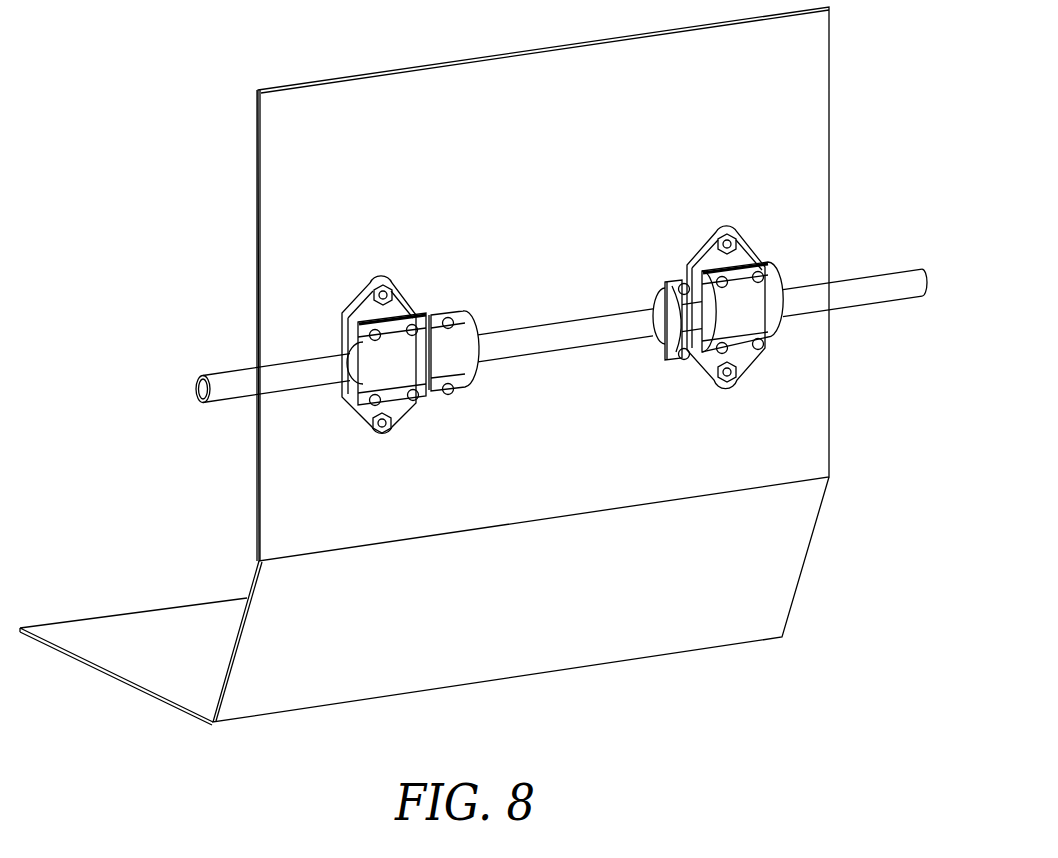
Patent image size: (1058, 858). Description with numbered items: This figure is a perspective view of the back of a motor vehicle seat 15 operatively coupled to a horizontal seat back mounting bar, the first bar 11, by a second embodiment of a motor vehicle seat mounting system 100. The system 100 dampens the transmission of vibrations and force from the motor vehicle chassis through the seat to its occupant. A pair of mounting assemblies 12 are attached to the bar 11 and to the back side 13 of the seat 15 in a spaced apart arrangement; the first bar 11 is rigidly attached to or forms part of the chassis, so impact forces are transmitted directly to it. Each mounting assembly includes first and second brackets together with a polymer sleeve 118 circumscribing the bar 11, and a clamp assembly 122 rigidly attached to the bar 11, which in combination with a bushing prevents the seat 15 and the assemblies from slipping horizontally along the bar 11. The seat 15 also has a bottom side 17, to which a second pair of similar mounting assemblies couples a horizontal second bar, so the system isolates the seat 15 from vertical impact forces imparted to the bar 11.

The first bar 11 is at (863, 305).
The mounting assembly 12 is at (345, 291).
The back side 13 is at (560, 202).
The motor vehicle seat 15 is at (257, 90).
The bottom side 17 is at (117, 679).
The motor vehicle seat mounting system 100 is at (340, 312).
The polymer sleeve 118 is at (353, 397).
The clamp assembly 122 is at (470, 324).